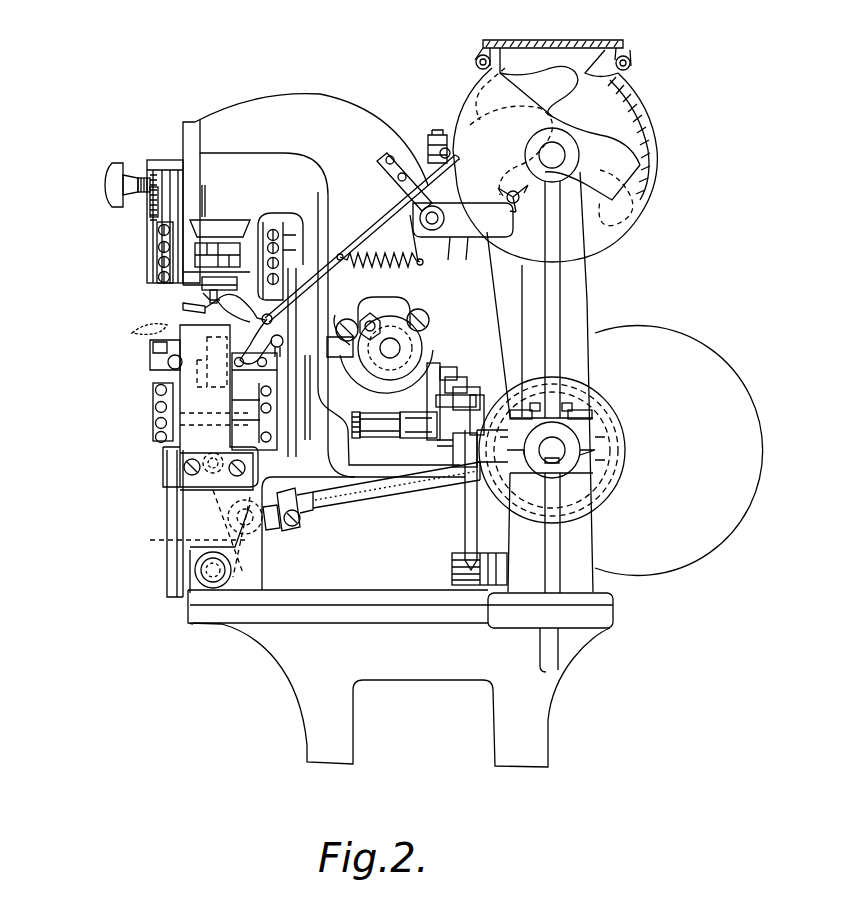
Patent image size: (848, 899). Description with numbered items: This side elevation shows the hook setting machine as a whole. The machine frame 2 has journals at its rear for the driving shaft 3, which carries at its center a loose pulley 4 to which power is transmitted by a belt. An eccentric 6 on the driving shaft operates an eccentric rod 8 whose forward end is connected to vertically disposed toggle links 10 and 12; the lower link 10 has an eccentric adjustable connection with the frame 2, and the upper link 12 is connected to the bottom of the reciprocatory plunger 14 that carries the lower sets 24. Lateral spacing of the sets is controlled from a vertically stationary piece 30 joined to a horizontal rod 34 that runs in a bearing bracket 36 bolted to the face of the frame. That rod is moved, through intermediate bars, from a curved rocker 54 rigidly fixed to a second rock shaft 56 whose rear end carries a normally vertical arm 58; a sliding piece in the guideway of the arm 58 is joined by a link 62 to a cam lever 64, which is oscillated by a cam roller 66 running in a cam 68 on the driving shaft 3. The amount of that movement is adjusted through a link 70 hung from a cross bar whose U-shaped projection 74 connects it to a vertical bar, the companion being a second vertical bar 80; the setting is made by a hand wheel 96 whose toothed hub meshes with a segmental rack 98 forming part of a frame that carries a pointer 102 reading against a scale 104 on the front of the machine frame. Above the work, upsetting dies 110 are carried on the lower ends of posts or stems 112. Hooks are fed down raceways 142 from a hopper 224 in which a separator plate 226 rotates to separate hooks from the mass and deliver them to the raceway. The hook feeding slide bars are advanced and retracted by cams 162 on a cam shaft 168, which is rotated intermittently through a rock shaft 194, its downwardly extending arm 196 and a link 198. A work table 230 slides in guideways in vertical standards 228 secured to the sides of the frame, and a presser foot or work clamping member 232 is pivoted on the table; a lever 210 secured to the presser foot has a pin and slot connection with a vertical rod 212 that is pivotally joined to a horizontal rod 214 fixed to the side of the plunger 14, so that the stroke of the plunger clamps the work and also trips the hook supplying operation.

The machine frame 2 is at (593, 603).
The driving shaft 3 is at (562, 438).
The loose pulley 4 is at (667, 442).
The eccentric 6 is at (627, 478).
The eccentric rod 8 is at (377, 497).
The lower toggle link 10 is at (227, 540).
The upper toggle link 12 is at (228, 506).
The reciprocatory plunger 14 is at (215, 440).
The lower set 24 is at (205, 377).
The vertically stationary piece 30 is at (155, 437).
The horizontal rod 34 is at (155, 423).
The bearing bracket 36 is at (233, 428).
The curved rocker 54 is at (352, 424).
The second rock shaft 56 is at (383, 437).
The normally vertical arm 58 is at (450, 367).
The link 62 is at (480, 372).
The cam lever 64 is at (468, 518).
The cam roller 66 is at (493, 444).
The cam 68 is at (603, 395).
The link 70 is at (297, 305).
The U-shaped projection 74 is at (268, 293).
The second vertical bar 80 is at (157, 277).
The hand wheel 96 is at (107, 175).
The segmental rack 98 is at (150, 212).
The pointer 102 is at (170, 163).
The scale 104 is at (183, 153).
The upsetting dies 110 is at (160, 332).
The posts or stems 112 is at (203, 293).
The raceways 142 is at (423, 183).
The cam 162 is at (423, 338).
The cam shaft 168 is at (394, 347).
The rock shaft 194 is at (440, 230).
The downwardly extending arm 196 is at (563, 272).
The link 198 is at (394, 310).
The lever 210 is at (300, 330).
The vertical rod 212 is at (273, 375).
The horizontal rod 214 is at (240, 415).
The hopper 224 is at (632, 90).
The separator plate 226 is at (650, 127).
The vertical standards 228 is at (180, 372).
The work table 230 is at (135, 331).
The presser foot 232 is at (190, 308).